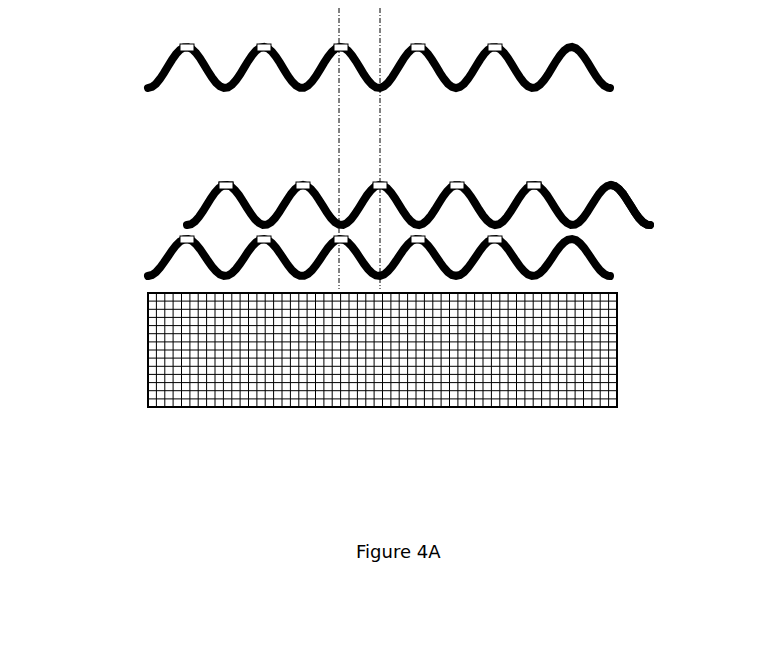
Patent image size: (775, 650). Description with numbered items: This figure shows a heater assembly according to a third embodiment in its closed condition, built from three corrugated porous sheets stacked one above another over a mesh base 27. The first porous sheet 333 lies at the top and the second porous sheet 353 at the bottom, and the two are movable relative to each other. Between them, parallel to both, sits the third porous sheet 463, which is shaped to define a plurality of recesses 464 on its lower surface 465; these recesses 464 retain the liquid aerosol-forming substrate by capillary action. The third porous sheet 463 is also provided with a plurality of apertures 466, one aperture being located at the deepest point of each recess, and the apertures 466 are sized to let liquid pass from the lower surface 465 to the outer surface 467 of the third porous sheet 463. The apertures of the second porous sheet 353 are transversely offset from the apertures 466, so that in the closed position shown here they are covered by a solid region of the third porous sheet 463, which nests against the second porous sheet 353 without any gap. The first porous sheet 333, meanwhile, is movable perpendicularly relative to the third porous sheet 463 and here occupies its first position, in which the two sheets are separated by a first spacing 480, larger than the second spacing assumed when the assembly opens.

The first porous sheet 333 is at (142, 64).
The third porous sheet 463 is at (182, 199).
The second porous sheet 353 is at (147, 258).
The apertures 466 is at (229, 179).
The outer surface 467 is at (513, 198).
The first spacing 480 is at (611, 93).
The lower surface 465 is at (632, 212).
The recesses 464 is at (620, 222).
The mesh substrate 27 is at (372, 408).